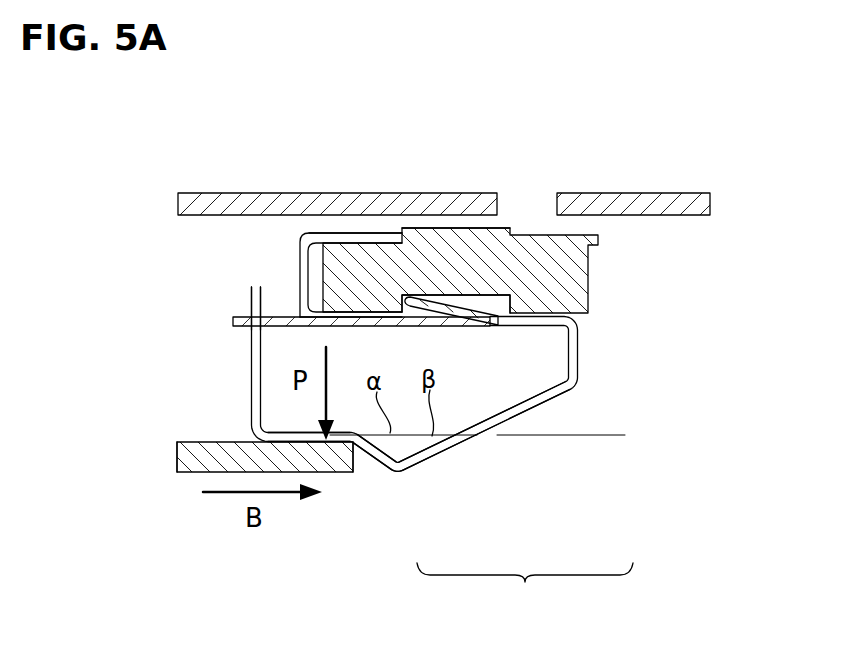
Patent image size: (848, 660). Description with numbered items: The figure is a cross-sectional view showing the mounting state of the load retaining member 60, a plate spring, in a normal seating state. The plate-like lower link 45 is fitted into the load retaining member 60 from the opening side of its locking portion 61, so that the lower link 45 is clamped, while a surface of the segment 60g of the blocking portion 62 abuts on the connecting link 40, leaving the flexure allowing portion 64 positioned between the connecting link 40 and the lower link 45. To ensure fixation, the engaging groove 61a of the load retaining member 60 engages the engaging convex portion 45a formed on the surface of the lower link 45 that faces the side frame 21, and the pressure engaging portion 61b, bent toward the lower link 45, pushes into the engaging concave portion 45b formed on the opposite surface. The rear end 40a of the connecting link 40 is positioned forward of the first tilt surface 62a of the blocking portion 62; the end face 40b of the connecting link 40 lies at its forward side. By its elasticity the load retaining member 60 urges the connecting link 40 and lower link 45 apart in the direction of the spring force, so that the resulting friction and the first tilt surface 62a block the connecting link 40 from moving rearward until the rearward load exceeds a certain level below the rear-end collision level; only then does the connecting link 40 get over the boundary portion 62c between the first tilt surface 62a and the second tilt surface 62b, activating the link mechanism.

The side frame 21 is at (390, 193).
The lower link 45 is at (590, 260).
The engaging convex portion 45a is at (510, 198).
The engaging concave portion 45b is at (590, 302).
The locking portion 61 is at (298, 270).
The engaging groove 61a is at (530, 198).
The pressure engaging portion 61b is at (467, 327).
The load retaining member 60 is at (602, 356).
The segment 60g is at (243, 433).
The flexure allowing portion 64 is at (248, 358).
The blocking portion 62 is at (525, 591).
The first tilt surface 62a is at (388, 476).
The second tilt surface 62b is at (462, 444).
The boundary portion 62c is at (410, 474).
The connecting link 40 is at (182, 475).
The rear end 40a is at (357, 474).
The end face of base member 40b is at (180, 455).